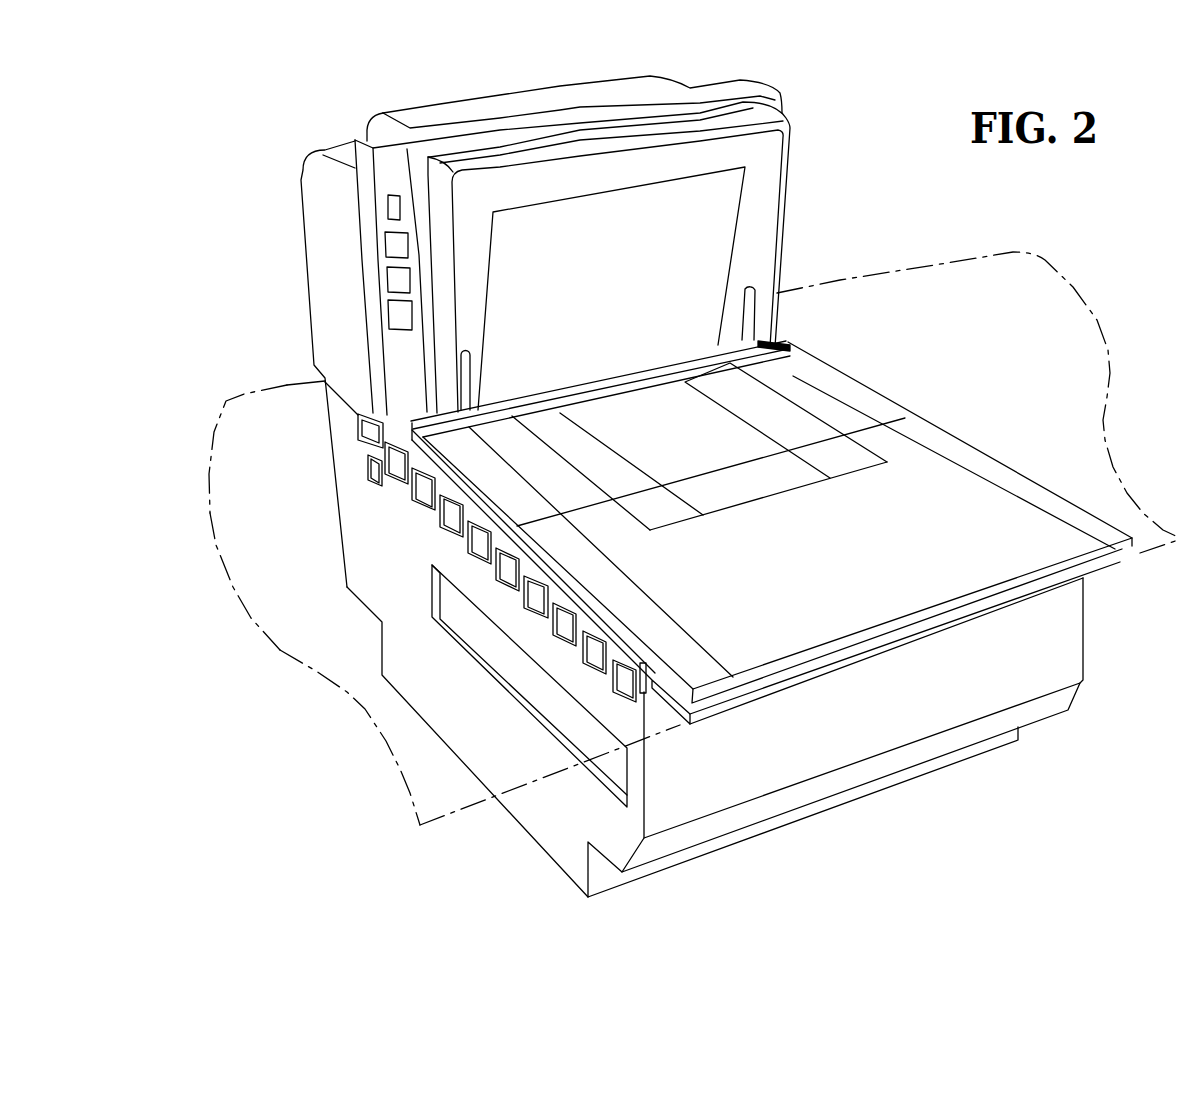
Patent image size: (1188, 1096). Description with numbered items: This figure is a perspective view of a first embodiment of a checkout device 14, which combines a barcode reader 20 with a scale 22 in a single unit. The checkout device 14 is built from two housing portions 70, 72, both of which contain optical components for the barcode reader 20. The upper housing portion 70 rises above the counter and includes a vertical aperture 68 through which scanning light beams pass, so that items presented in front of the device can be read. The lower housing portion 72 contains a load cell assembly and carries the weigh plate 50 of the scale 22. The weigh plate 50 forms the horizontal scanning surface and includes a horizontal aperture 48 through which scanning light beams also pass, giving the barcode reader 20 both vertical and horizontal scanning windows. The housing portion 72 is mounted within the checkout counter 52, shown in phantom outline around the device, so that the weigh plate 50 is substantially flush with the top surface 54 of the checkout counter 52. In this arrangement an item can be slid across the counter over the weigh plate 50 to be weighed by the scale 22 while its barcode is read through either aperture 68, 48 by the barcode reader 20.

The checkout device 14 is at (597, 225).
The housing portion 70 is at (465, 110).
The vertical aperture 68 is at (720, 228).
The barcode reader 20 is at (296, 239).
The scale 22 is at (951, 424).
The weigh plate 50 is at (993, 507).
The horizontal aperture 48 is at (751, 490).
The housing portion 72 is at (349, 521).
The checkout counter 52 is at (235, 389).
The top surface 54 is at (258, 595).